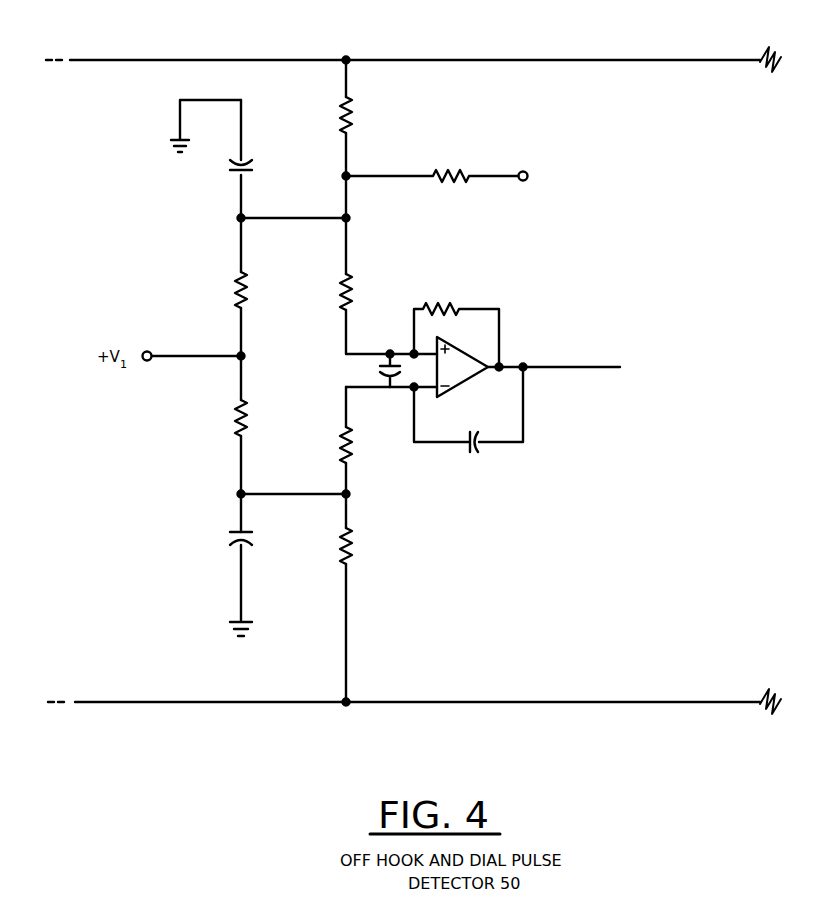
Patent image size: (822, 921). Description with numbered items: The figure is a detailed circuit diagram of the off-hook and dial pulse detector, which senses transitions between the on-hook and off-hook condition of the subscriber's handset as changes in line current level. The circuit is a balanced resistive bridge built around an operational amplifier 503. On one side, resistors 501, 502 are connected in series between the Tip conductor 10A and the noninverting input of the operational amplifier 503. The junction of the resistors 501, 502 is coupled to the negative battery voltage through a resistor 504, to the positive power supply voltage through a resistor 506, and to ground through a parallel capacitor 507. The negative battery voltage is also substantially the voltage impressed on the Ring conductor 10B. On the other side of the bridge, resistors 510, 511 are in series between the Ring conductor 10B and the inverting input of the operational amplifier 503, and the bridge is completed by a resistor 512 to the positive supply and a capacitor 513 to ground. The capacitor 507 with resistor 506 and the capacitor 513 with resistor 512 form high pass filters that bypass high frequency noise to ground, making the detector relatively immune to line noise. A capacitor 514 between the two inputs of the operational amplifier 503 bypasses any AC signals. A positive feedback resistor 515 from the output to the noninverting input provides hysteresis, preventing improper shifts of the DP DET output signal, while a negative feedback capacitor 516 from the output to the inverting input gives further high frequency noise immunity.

The Tip conductor 10A is at (502, 53).
The Ring conductor 10B is at (561, 700).
The resistor 501 is at (354, 130).
The resistor 502 is at (355, 288).
The operational amplifier 503 is at (556, 367).
The resistor 504 is at (451, 168).
The resistor 506 is at (235, 288).
The capacitor 507 is at (229, 172).
The resistor 510 is at (356, 548).
The resistor 511 is at (354, 445).
The resistor 512 is at (239, 415).
The capacitor 513 is at (233, 541).
The capacitor 514 is at (382, 367).
The positive feedback resistor 515 is at (441, 295).
The negative feedback capacitor 516 is at (486, 454).